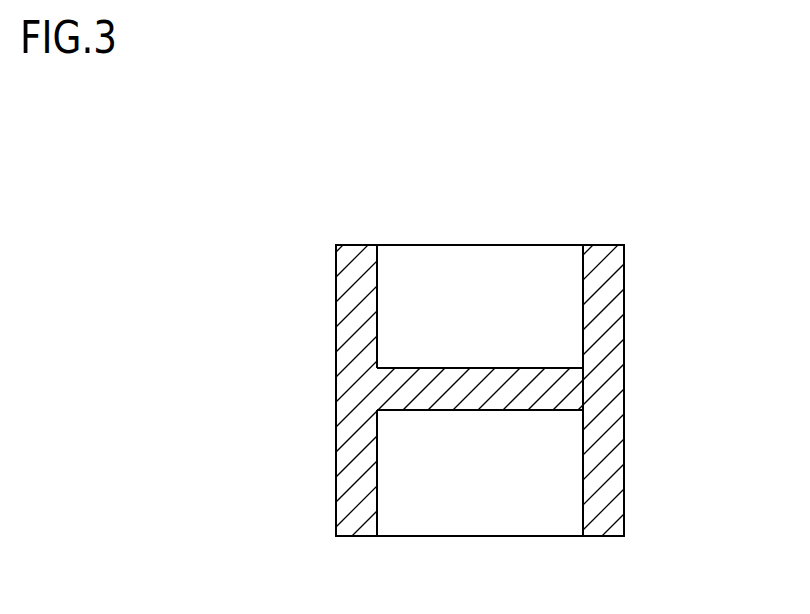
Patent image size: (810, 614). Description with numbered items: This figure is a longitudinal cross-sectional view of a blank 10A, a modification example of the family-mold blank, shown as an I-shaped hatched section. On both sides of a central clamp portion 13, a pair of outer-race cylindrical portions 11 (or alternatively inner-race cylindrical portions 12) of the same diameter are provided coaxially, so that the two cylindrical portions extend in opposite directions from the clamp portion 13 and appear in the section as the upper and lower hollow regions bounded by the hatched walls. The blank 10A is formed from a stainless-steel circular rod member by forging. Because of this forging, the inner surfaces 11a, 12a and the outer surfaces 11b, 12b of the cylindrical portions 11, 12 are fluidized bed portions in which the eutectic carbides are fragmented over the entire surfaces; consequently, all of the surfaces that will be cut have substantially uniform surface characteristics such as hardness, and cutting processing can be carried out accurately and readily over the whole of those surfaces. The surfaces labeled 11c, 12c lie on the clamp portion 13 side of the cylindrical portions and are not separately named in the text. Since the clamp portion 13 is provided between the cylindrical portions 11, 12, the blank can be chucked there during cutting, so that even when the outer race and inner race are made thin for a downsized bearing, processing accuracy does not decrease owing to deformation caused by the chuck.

The blank 10A is at (431, 351).
The outer-race cylindrical portion 11 is at (431, 390).
The inner-race cylindrical portion 12 is at (628, 295).
The inner surface of outer-race cylindrical portion 11a is at (446, 388).
The inner surface of inner-race cylindrical portion 12a is at (378, 267).
The outer surface of outer-race cylindrical portion 11b is at (255, 390).
The outer surface of inner-race cylindrical portion 12b is at (336, 279).
The web surface of first core member 11c is at (480, 396).
The web surface of second core member 12c is at (473, 368).
The clamp portion 13 is at (603, 385).